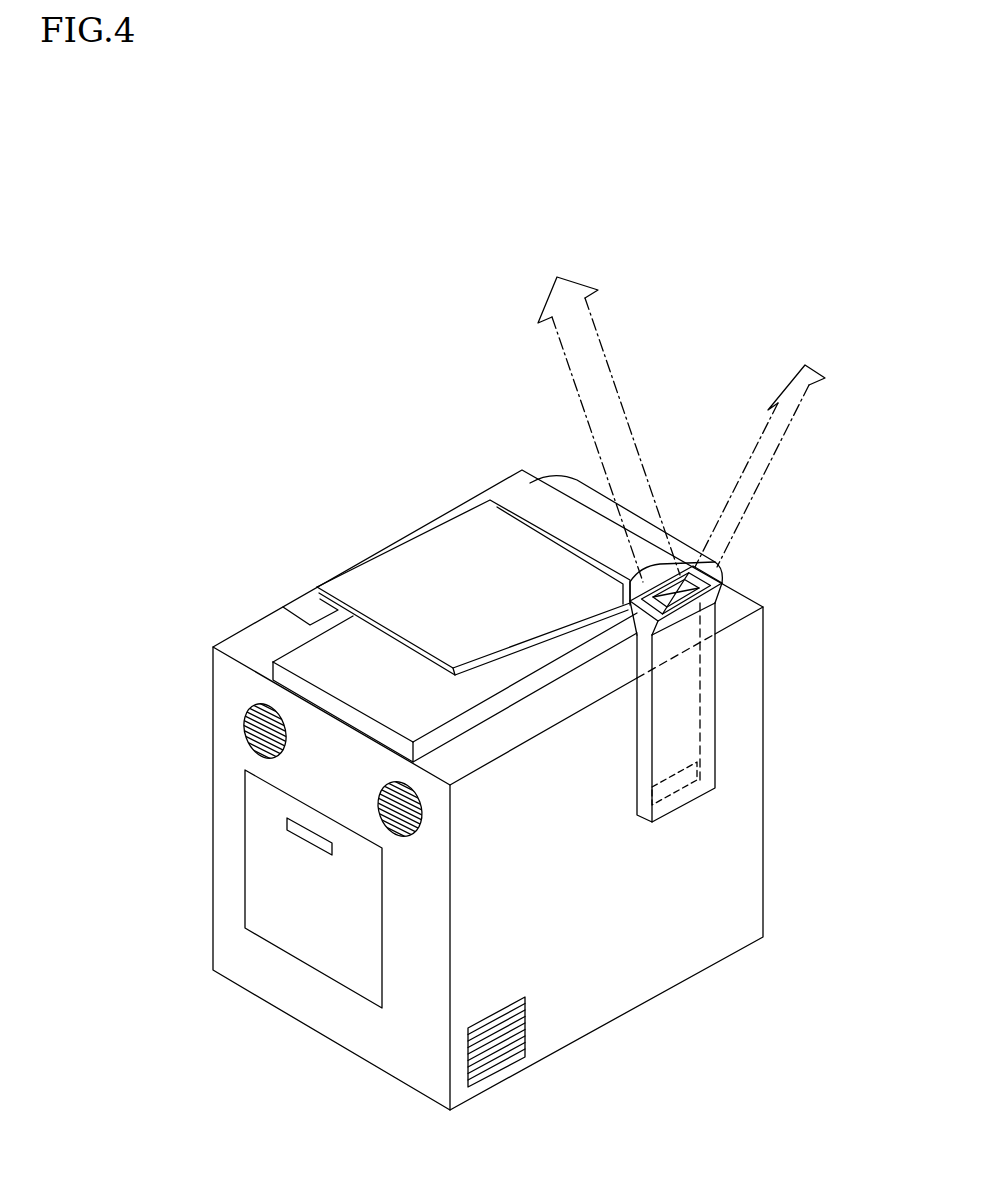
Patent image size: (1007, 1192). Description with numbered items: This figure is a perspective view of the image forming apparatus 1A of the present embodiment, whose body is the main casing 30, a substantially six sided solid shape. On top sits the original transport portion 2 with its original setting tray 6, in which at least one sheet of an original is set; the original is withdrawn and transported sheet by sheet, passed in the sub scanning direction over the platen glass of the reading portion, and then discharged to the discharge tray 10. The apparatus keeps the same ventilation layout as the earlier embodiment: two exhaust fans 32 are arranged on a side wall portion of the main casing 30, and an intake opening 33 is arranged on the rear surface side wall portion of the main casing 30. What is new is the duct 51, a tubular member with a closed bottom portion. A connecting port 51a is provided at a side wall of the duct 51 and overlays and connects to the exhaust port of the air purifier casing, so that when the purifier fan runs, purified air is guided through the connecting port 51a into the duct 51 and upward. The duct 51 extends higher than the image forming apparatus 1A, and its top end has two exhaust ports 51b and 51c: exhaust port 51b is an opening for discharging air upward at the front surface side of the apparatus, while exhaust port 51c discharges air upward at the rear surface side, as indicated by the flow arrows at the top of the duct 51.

The image forming apparatus 1A is at (323, 397).
The original transport portion 2 is at (290, 689).
The original setting tray 6 is at (390, 573).
The discharge tray 10 is at (313, 655).
The main casing 30 is at (400, 1032).
The exhaust fans 32 is at (252, 738).
The intake opening 33 is at (500, 1055).
The duct 51 is at (686, 640).
The connecting port 51a is at (650, 795).
The exhaust port 51b is at (662, 546).
The exhaust port 51c is at (717, 608).